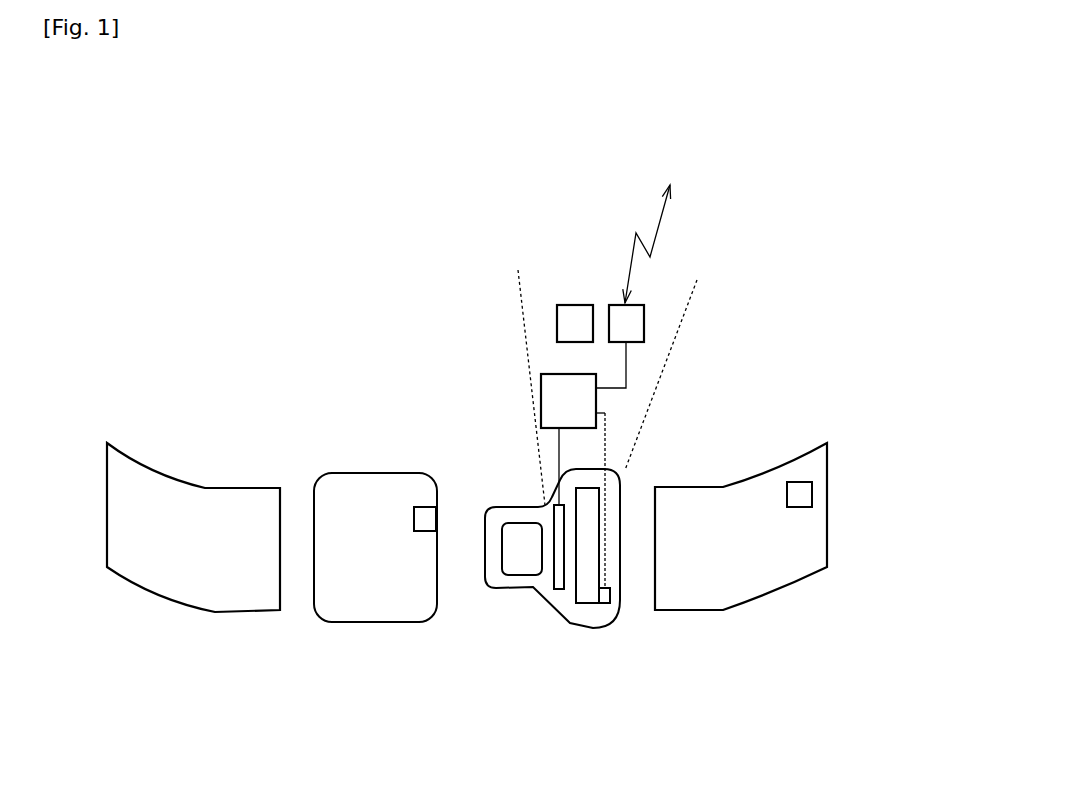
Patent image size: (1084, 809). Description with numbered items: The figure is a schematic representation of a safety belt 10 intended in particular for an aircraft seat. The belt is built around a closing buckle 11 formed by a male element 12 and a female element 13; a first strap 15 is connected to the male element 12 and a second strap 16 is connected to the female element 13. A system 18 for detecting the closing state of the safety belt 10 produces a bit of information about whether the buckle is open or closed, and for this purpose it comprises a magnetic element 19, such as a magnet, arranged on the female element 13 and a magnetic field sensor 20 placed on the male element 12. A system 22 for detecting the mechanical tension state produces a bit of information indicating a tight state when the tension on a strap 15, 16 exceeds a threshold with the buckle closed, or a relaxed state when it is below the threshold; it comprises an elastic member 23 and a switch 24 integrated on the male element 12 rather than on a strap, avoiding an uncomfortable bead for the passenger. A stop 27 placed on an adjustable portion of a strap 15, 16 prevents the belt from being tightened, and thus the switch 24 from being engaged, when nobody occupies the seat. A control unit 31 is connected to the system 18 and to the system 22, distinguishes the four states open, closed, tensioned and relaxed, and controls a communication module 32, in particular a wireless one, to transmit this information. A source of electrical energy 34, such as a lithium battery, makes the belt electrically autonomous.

The safety belt 10 is at (190, 210).
The closing buckle 11 is at (440, 447).
The male element 12 is at (567, 607).
The female element 13 is at (365, 590).
The first strap 15 is at (723, 507).
The second strap 16 is at (150, 493).
The system for detecting the closing state 18 is at (532, 555).
The magnetic element 19 is at (418, 520).
The magnetic field sensor 20 is at (558, 578).
The system for detecting the mechanical tension state 22 is at (590, 610).
The elastic member 23 is at (592, 538).
The switch 24 is at (610, 600).
The stop 27 is at (803, 493).
The control unit 31 is at (556, 403).
The communication module 32 is at (628, 322).
The source of electrical energy 34 is at (568, 317).